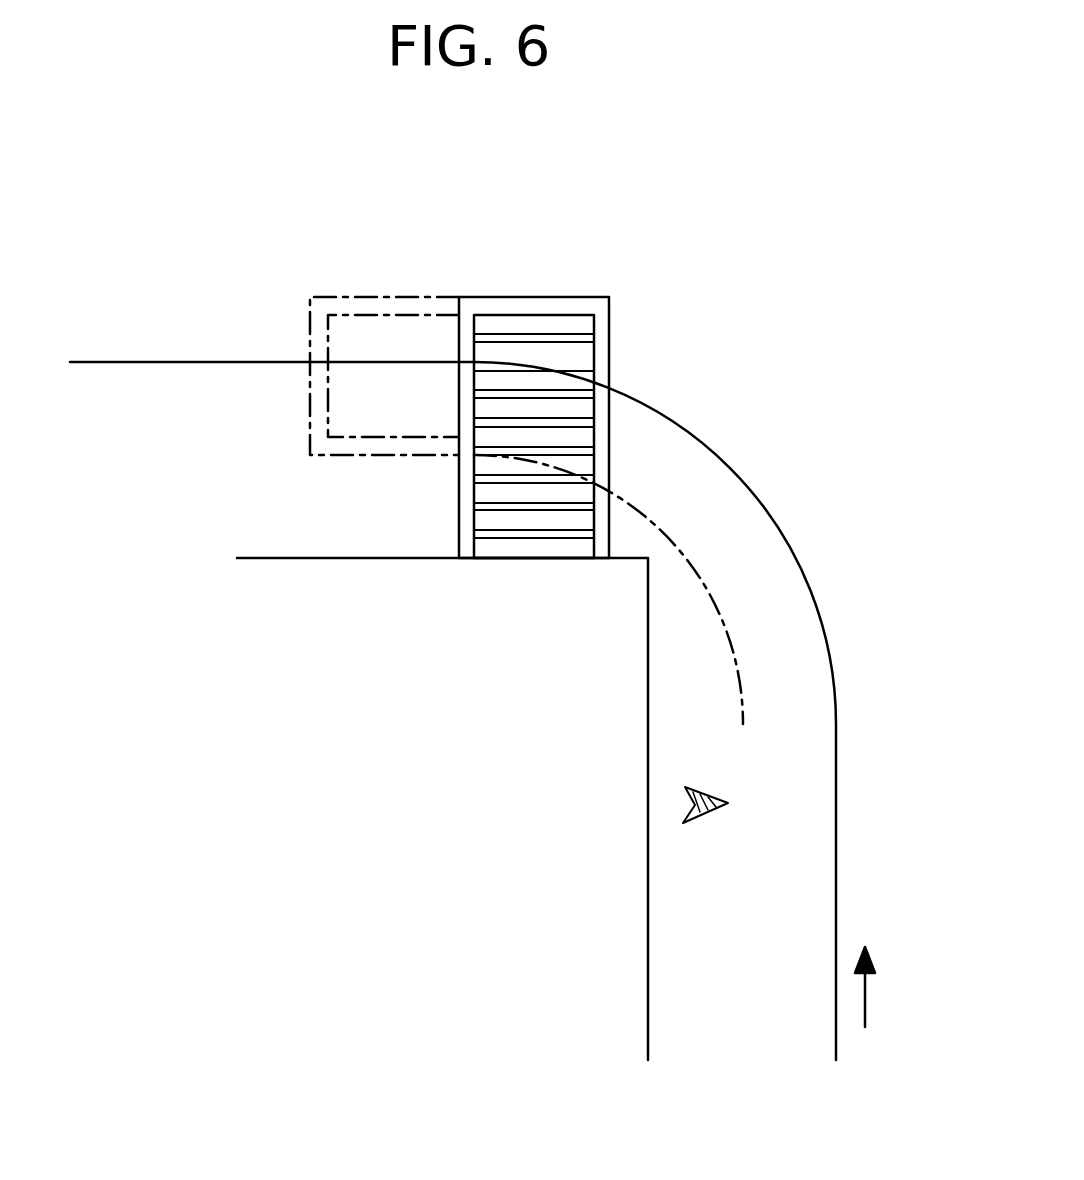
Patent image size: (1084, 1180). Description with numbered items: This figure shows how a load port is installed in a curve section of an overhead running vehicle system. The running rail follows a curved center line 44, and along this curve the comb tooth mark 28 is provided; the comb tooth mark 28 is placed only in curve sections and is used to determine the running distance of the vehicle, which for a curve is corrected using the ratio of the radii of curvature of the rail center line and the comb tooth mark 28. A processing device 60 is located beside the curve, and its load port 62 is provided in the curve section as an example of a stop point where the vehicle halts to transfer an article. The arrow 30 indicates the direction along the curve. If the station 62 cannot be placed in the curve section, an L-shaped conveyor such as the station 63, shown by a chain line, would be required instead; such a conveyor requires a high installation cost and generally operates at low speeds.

The comb tooth mark 28 is at (737, 660).
The conveyance direction arrow 30 is at (710, 813).
The center line of the running rail 44 is at (838, 757).
The processing device 60 is at (607, 985).
The load port 62 is at (609, 340).
The station 63 is at (380, 297).